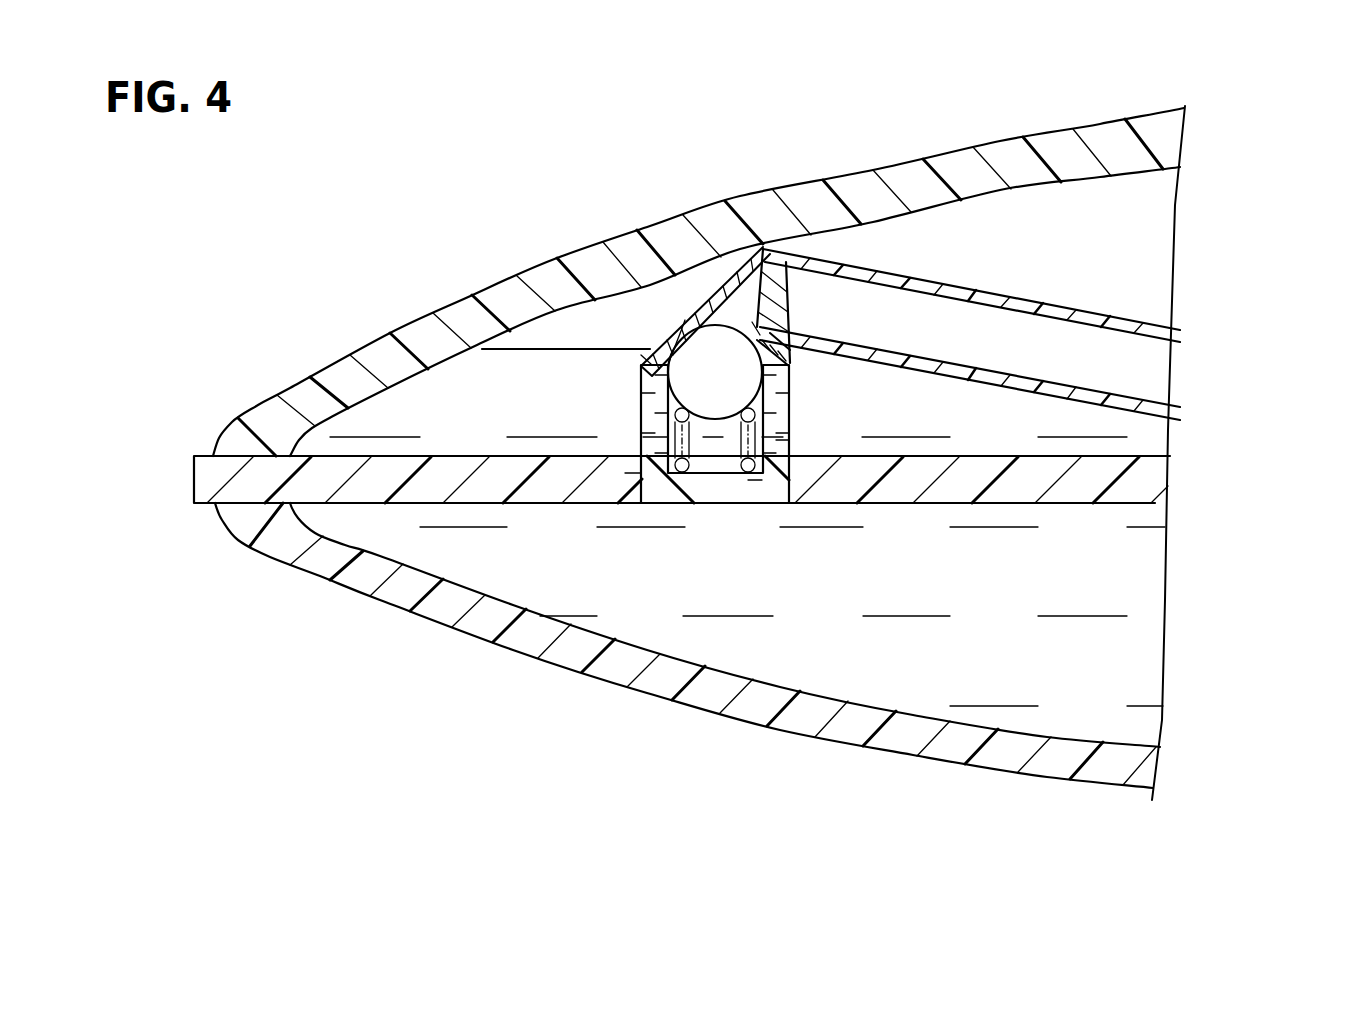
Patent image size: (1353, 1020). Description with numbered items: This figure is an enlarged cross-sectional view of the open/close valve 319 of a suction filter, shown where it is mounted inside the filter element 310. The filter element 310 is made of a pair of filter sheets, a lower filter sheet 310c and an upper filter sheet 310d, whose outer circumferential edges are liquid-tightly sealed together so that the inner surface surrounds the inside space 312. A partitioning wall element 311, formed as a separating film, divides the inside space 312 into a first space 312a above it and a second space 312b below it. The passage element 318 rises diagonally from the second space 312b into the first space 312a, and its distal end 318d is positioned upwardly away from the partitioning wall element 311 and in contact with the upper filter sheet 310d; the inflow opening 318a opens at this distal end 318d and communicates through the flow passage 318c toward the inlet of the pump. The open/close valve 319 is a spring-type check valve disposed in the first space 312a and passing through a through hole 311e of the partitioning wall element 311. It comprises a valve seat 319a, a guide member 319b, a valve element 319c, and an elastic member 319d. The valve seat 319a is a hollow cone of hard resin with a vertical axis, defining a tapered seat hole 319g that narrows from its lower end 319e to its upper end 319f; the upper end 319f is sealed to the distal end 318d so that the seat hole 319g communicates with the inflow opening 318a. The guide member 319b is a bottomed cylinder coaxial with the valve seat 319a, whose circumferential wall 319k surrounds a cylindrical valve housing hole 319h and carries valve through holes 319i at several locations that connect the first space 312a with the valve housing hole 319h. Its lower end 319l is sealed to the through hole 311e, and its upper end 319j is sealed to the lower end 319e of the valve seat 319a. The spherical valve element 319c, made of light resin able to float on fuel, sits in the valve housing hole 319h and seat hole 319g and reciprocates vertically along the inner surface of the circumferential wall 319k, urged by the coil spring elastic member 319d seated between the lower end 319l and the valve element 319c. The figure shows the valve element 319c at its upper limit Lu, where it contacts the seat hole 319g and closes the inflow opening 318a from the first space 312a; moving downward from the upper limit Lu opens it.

The filter element 310 is at (122, 415).
The lower filter sheet 310c is at (262, 540).
The upper filter sheet 310d is at (240, 435).
The partitioning wall element 311 is at (430, 505).
The through hole 311e is at (765, 490).
The inside space 312 is at (1277, 470).
The first space 312a is at (1127, 442).
The second space 312b is at (1135, 617).
The passage element 318 is at (980, 287).
The inflow opening 318a is at (750, 338).
The flow passage 318c is at (1023, 347).
The distal end 318d is at (775, 325).
The open/close valve 319 is at (681, 503).
The valve seat 319a is at (703, 322).
The guide member 319b is at (755, 482).
The valve element 319c is at (447, 506).
The elastic member 319d is at (641, 447).
The lower end 319e is at (641, 390).
The upper end 319f is at (755, 320).
The seat hole 319g is at (644, 352).
The valve housing hole 319h is at (720, 463).
The valve through holes 319i is at (641, 402).
The upper end 319j is at (780, 440).
The circumferential wall 319k is at (789, 395).
The lower end 319l is at (632, 478).
The upper limit Lu is at (685, 318).